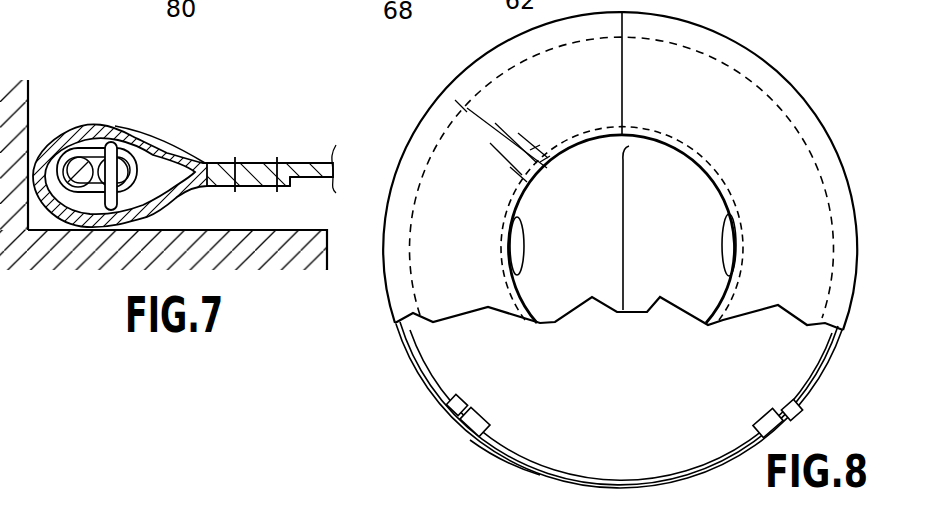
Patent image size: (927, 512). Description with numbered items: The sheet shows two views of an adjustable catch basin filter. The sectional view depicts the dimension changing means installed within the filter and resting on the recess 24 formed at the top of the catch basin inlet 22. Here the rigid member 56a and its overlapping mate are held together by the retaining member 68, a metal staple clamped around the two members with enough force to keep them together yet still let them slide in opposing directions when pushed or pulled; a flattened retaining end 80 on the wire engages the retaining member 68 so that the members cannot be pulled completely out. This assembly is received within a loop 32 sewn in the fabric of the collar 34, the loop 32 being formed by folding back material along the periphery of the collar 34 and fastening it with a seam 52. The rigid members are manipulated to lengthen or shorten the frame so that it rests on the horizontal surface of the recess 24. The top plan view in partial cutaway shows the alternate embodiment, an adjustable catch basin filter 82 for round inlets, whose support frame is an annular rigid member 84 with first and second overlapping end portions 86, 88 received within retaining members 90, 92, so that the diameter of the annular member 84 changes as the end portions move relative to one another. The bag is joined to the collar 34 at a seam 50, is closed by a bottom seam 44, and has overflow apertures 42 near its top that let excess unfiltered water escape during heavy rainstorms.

In FIG. 7, the catch basin inlet 22 is at (332, 240).
In FIG. 7, the recess 24 is at (165, 230).
In FIG. 7, the loops 32 is at (172, 150).
In FIG. 8, the loops 32 is at (783, 66).
In FIG. 7, the collar 34 is at (303, 160).
In FIG. 8, the collar 34 is at (762, 198).
In FIG. 8, the overflow apertures 42 is at (524, 242).
In FIG. 8, the bottom seam 44 is at (625, 210).
In FIG. 8, the seam 50 is at (682, 138).
In FIG. 7, the seam 52 is at (248, 188).
In FIG. 7, the rigid member 56a is at (78, 172).
In FIG. 7, the retaining member 68 is at (93, 153).
In FIG. 8, the retaining member 68 is at (502, 141).
In FIG. 7, the retaining end 80 is at (150, 140).
In FIG. 8, the adjustable catch basin filter 82 is at (421, 407).
In FIG. 8, the annular rigid member 84 is at (826, 362).
In FIG. 8, the first overlapping end portion 86 is at (588, 466).
In FIG. 8, the second overlapping end portion 88 is at (515, 462).
In FIG. 8, the retaining member 90 is at (762, 412).
In FIG. 8, the retaining member 92 is at (480, 412).